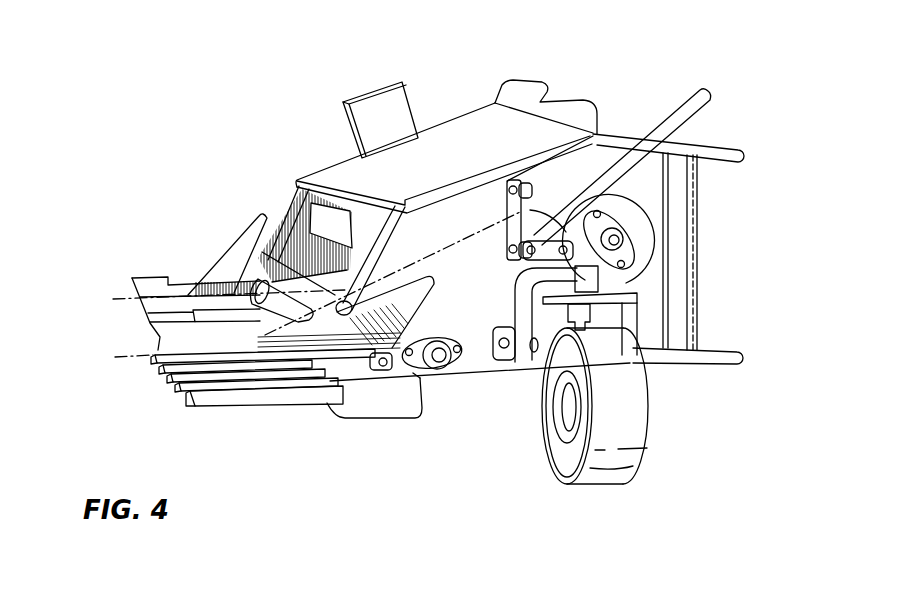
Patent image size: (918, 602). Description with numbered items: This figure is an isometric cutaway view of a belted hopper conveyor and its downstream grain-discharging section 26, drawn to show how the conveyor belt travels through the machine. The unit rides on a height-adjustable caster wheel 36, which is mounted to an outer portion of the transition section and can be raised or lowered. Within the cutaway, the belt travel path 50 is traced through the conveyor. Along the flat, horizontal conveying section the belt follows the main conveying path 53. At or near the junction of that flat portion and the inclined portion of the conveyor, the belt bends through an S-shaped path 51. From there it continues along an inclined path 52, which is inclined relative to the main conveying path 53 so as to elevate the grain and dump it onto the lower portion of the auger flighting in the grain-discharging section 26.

The grain-discharging section 26 is at (288, 122).
The caster wheel 36 is at (627, 423).
The belt travel path 50 is at (213, 288).
The S-shaped path 51 is at (252, 390).
The inclined path 52 is at (482, 237).
The main conveying path 53 is at (122, 297).